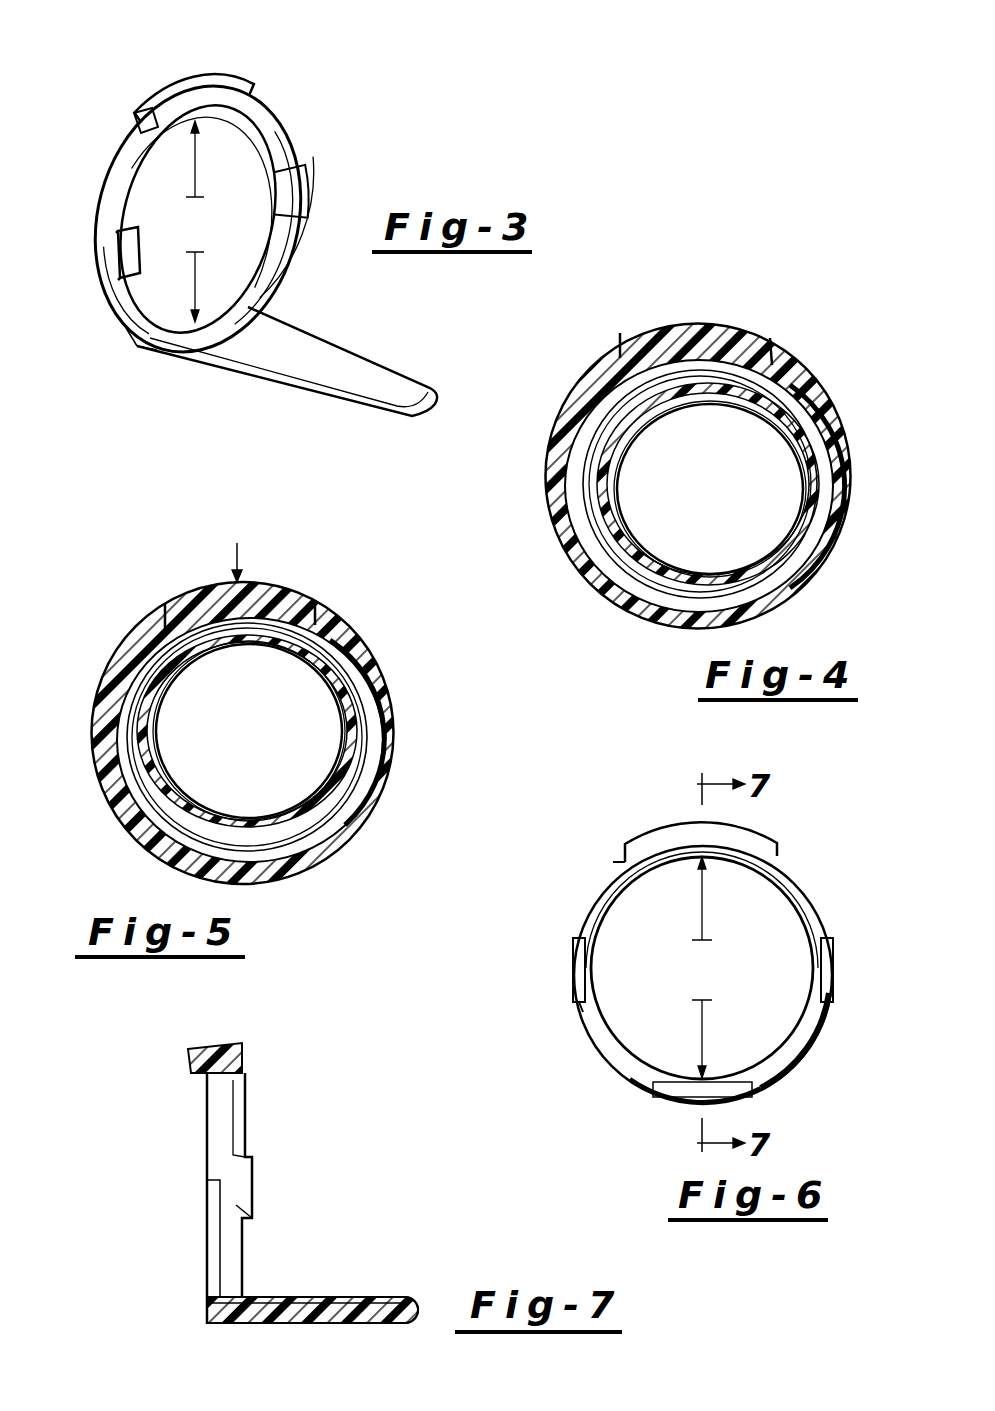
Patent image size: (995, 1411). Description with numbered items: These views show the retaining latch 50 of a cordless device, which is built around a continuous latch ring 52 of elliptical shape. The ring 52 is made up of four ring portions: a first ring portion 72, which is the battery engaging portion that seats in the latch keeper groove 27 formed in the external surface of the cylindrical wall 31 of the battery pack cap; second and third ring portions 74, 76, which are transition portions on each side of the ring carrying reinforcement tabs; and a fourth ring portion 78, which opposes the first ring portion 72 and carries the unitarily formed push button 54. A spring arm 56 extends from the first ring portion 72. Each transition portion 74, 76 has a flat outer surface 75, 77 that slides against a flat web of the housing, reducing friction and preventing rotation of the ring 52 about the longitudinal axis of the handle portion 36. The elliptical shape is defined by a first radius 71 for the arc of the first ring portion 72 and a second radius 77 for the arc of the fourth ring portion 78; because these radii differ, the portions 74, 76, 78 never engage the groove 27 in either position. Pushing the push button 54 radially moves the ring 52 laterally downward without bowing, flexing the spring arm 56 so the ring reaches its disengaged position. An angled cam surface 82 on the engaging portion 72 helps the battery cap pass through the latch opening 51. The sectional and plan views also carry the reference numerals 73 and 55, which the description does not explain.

In FIG. 4, the latch keeper groove 27 is at (712, 396).
In FIG. 5, the latch keeper groove 27 is at (182, 652).
In FIG. 4, the cylindrical wall 31 is at (615, 452).
In FIG. 5, the cylindrical wall 31 is at (228, 643).
In FIG. 4, the handle portion 36 is at (805, 395).
In FIG. 5, the handle portion 36 is at (115, 655).
In FIG. 3, the latch 50 is at (286, 60).
In FIG. 3, the latch opening 51 is at (302, 170).
In FIG. 3, the latch ring 52 is at (285, 110).
In FIG. 6, the latch ring 52 is at (812, 880).
In FIG. 7, the latch ring 52 is at (255, 1115).
In FIG. 3, the push button 54 is at (200, 73).
In FIG. 4, the push button 54 is at (735, 340).
In FIG. 5, the push button 54 is at (275, 605).
In FIG. 6, the push button 54 is at (760, 848).
In FIG. 7, the push button 54 is at (222, 1042).
In FIG. 6, the flat portion 55 is at (673, 1094).
In FIG. 7, the flat portion 55 is at (418, 1308).
In FIG. 3, the spring arm 56 is at (320, 362).
In FIG. 6, the spring arm 56 is at (770, 1082).
In FIG. 7, the spring arm 56 is at (303, 1297).
In FIG. 3, the first radius 71 is at (197, 278).
In FIG. 6, the first radius 71 is at (703, 1037).
In FIG. 3, the first ring portion 72 is at (200, 166).
In FIG. 4, the first ring portion 72 is at (682, 595).
In FIG. 5, the first ring portion 72 is at (298, 843).
In FIG. 6, the first ring portion 72 is at (632, 1065).
In FIG. 6, the side tab 73 is at (575, 965).
In FIG. 3, the second ring portion 74 is at (292, 228).
In FIG. 4, the second ring portion 74 is at (833, 445).
In FIG. 5, the second ring portion 74 is at (365, 726).
In FIG. 6, the second ring portion 74 is at (820, 1002).
In FIG. 7, the second ring portion 74 is at (247, 1215).
In FIG. 3, the flat outer surface 75 is at (116, 254).
In FIG. 6, the flat outer surface 75 is at (832, 945).
In FIG. 3, the third ring portion 76 is at (122, 293).
In FIG. 4, the third ring portion 76 is at (555, 458).
In FIG. 5, the third ring portion 76 is at (97, 717).
In FIG. 6, the third ring portion 76 is at (578, 990).
In FIG. 3, the flat outer surface 77 is at (310, 205).
In FIG. 6, the flat outer surface 77 is at (703, 905).
In FIG. 3, the fourth ring portion 78 is at (182, 133).
In FIG. 6, the fourth ring portion 78 is at (615, 860).
In FIG. 3, the angled cam surface 82 is at (250, 278).
In FIG. 4, the angled cam surface 82 is at (603, 618).
In FIG. 7, the angled cam surface 82 is at (207, 1292).